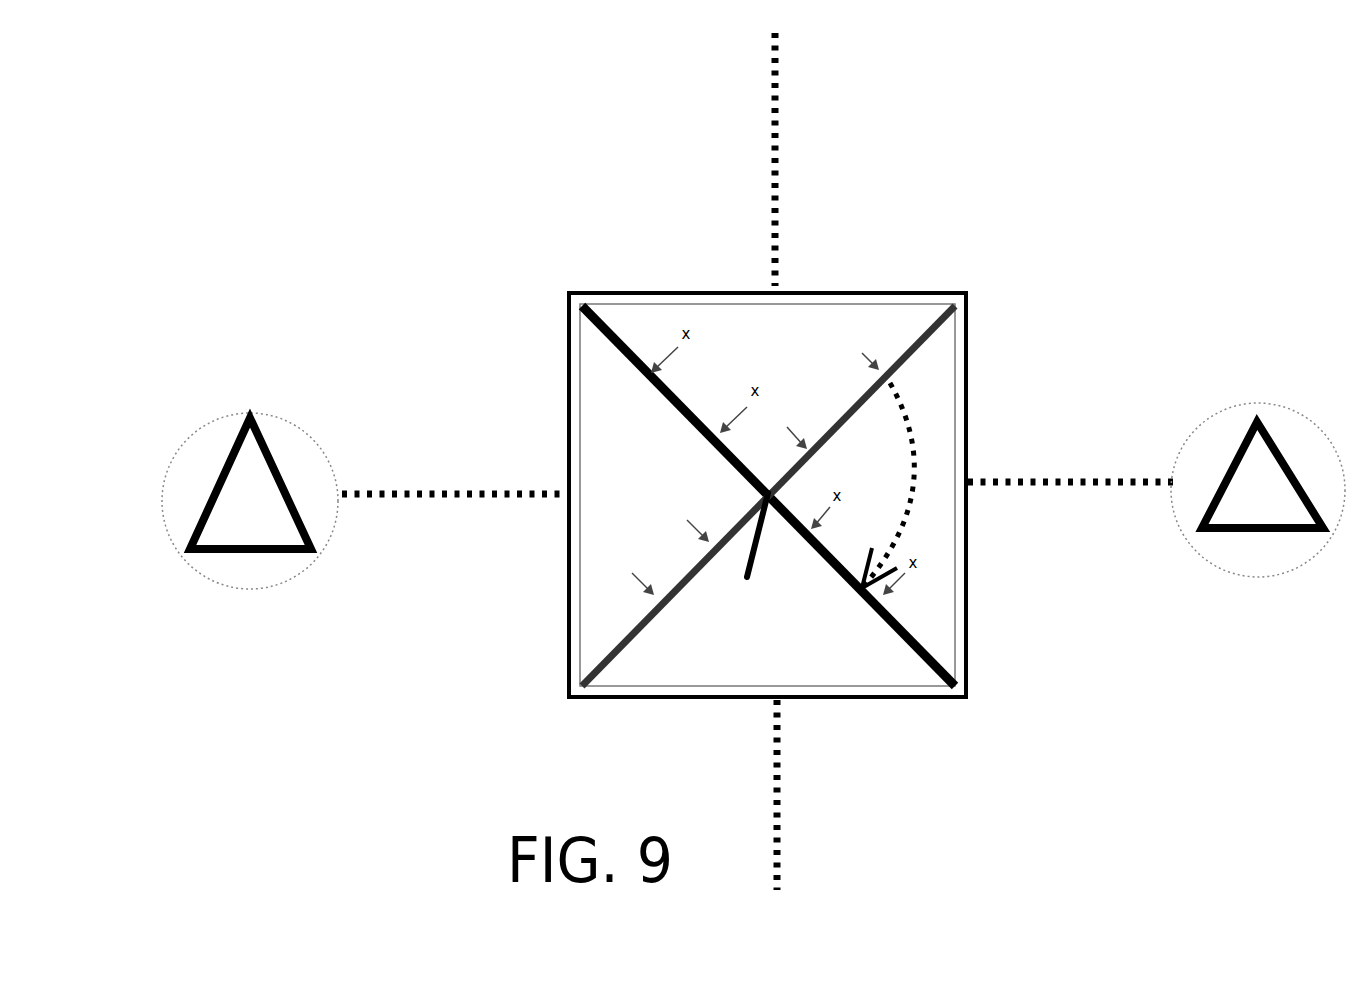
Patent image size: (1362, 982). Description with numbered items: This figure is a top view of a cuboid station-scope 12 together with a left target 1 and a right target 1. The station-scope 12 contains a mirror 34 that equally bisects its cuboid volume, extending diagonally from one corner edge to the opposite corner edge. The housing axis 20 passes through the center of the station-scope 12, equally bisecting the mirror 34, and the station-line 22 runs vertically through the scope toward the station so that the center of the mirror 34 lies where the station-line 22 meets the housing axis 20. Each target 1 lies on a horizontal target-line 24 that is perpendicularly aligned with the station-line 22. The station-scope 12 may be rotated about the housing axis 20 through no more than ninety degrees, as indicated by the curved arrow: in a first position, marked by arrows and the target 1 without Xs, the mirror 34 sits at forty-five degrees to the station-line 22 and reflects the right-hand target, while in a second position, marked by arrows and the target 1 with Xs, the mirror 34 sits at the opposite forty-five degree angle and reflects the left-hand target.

The target 1 is at (753, 470).
The station-scope 12 is at (767, 476).
The housing axis 20 is at (740, 558).
The station-line 22 is at (774, 461).
The target-line 24 is at (757, 469).
The mirror 34 is at (768, 496).